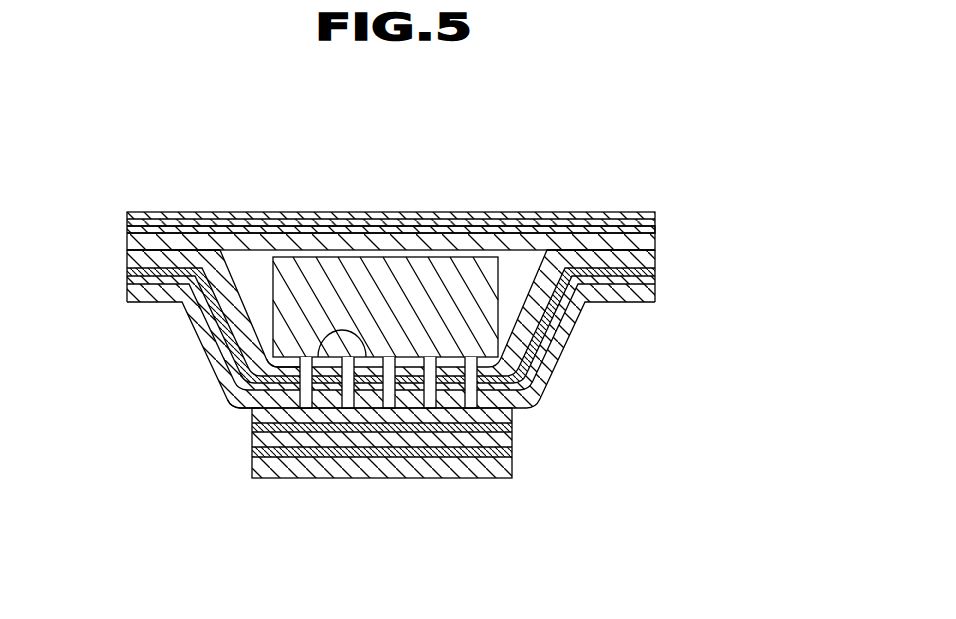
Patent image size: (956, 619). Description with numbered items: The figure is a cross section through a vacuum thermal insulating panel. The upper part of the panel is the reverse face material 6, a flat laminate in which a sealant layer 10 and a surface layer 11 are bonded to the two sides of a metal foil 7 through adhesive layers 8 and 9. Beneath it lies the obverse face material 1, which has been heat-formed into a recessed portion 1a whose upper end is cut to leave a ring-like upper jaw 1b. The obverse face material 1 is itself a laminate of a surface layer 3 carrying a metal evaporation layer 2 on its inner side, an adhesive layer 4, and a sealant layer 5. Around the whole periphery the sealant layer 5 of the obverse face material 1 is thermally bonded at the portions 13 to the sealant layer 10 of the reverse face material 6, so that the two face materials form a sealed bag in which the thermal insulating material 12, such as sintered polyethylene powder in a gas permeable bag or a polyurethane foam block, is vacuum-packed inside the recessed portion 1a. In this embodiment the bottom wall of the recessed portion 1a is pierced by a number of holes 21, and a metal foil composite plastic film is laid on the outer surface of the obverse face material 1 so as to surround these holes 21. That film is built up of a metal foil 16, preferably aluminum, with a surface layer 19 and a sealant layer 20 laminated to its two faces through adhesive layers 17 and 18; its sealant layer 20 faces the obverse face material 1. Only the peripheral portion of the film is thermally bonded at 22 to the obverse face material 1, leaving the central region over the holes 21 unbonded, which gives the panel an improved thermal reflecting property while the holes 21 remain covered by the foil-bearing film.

The obverse face material 1 is at (392, 280).
The recessed portion 1a is at (362, 358).
The ring-like upper jaw 1b is at (170, 250).
The metal evaporation layer 2 is at (643, 281).
The surface layer 3 is at (640, 294).
The adhesive layer 4 is at (640, 272).
The sealant layer 5 is at (640, 260).
The reverse face material 6 is at (367, 196).
The metal foil 7 is at (336, 230).
The adhesive layer 8 is at (307, 229).
The adhesive layer 9 is at (407, 223).
The sealant layer 10 is at (250, 243).
The surface layer 11 is at (437, 219).
The thermal insulating material 12 is at (487, 288).
The thermal adhesive-bonded portion 13 is at (597, 248).
The metal foil 16 is at (507, 442).
The adhesive layer 17 is at (507, 457).
The adhesive layer 18 is at (507, 427).
The surface layer 19 is at (501, 476).
The sealant layer 20 is at (510, 417).
The holes 21 is at (262, 365).
The thermal adhesive-bonded portion 22 is at (232, 397).